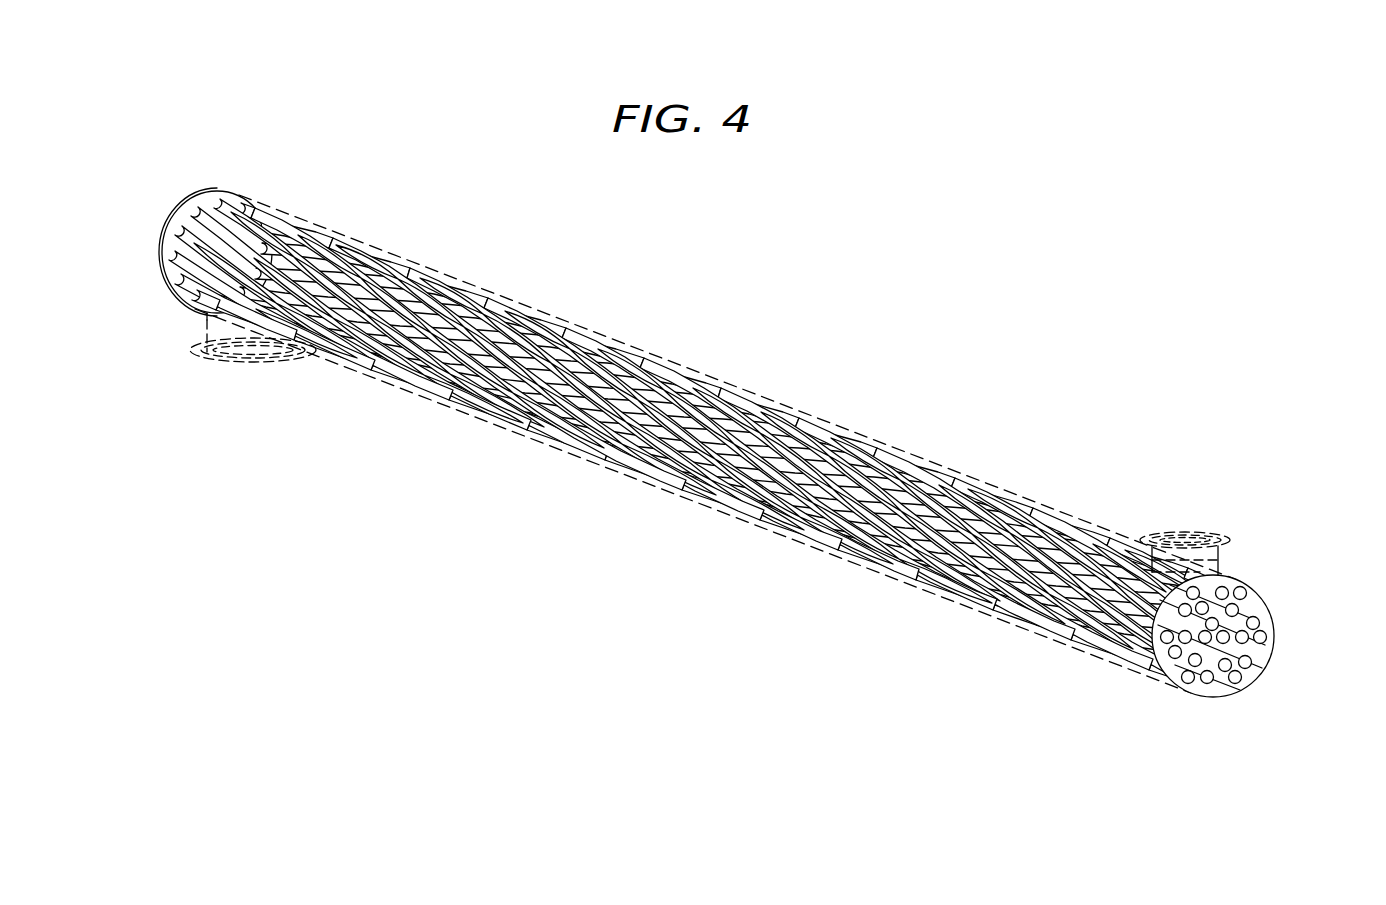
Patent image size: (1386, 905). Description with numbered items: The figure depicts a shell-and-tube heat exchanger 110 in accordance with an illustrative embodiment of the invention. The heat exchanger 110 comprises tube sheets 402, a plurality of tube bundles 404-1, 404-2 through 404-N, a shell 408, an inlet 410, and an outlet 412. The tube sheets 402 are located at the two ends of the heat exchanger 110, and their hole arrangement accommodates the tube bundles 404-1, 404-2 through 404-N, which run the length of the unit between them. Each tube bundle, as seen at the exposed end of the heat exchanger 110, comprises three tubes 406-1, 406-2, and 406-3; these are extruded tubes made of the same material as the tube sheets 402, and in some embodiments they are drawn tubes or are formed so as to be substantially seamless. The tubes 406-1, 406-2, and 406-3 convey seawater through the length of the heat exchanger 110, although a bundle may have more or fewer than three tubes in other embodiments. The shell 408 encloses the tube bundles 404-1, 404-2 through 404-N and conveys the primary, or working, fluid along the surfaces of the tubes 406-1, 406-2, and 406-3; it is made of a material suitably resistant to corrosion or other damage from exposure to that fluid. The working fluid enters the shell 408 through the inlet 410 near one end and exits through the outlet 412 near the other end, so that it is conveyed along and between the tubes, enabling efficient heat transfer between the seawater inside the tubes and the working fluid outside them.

The heat exchanger 110 is at (927, 248).
The tube sheets 402 is at (218, 197).
The tube bundle 404-1 is at (1236, 585).
The tube bundle 404-2 is at (1268, 630).
The tube bundle 404-N is at (1222, 668).
The tube 406-1 is at (1183, 665).
The tube 406-2 is at (1187, 684).
The tube 406-3 is at (1208, 684).
The shell 408 is at (640, 483).
The inlet 410 is at (1190, 535).
The outlet 412 is at (245, 365).